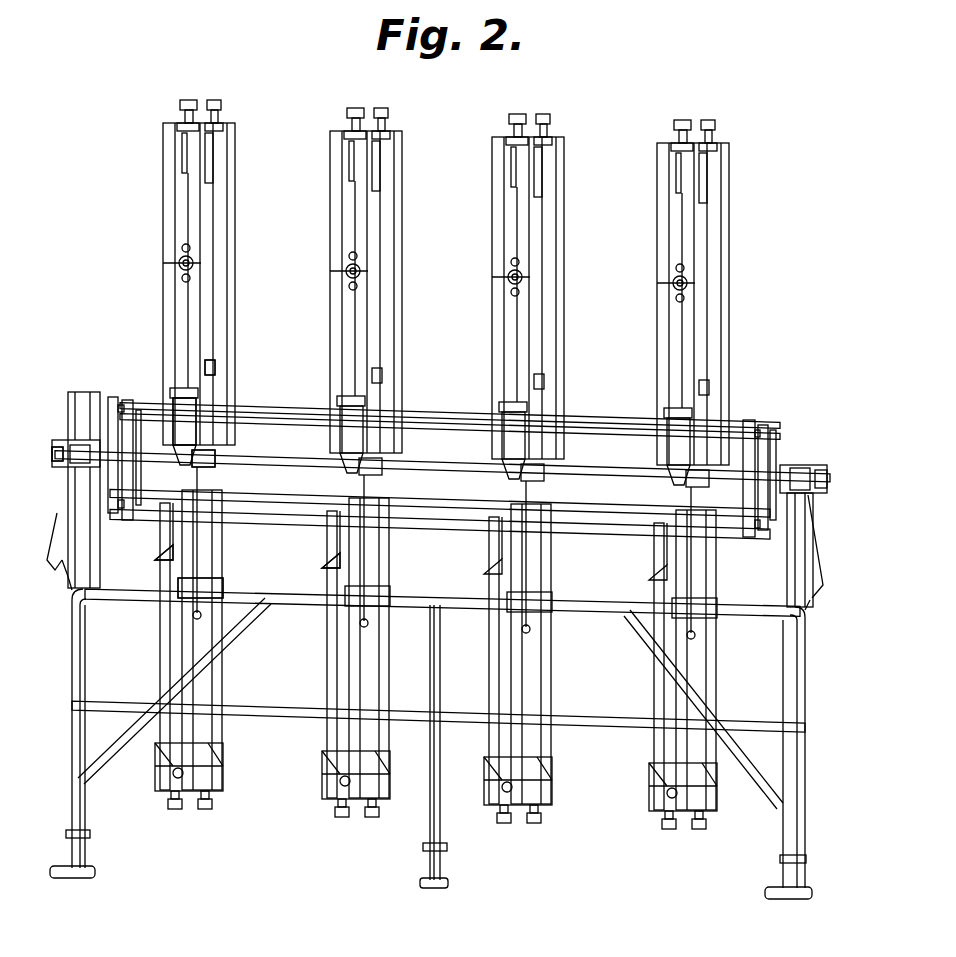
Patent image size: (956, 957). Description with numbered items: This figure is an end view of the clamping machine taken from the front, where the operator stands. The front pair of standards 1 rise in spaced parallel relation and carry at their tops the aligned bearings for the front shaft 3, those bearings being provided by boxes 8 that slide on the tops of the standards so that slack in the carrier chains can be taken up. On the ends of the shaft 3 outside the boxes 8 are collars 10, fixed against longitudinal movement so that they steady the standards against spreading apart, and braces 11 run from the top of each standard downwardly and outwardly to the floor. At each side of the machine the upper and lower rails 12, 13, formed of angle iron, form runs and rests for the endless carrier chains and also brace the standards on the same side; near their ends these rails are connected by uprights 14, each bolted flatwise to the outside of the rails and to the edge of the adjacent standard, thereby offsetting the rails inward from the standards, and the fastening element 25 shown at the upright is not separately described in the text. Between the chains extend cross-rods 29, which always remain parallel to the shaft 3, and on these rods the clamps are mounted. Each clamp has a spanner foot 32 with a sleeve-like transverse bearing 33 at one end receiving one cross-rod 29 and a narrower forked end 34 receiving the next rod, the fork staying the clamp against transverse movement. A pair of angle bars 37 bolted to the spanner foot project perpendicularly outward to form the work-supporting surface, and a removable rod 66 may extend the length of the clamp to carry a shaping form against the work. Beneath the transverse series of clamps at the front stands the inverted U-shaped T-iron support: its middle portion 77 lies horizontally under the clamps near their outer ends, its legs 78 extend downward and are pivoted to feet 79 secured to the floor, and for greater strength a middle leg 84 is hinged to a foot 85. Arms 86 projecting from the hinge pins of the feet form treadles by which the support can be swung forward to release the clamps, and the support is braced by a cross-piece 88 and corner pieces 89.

The front standards 1 is at (62, 602).
The front shaft 3 is at (432, 465).
The boxes 8 is at (70, 440).
The collars 10 is at (58, 442).
The braces 11 is at (56, 548).
The upper rails 12 is at (130, 410).
The lower rails 13 is at (116, 522).
The uprights 14 is at (118, 400).
The bolt 25 is at (119, 402).
The cross-rod 29 is at (287, 418).
The spanner foot 32 is at (196, 428).
The transverse bearing 33 is at (216, 462).
The forked end 34 is at (212, 400).
The angle bars 37 is at (168, 550).
The rod 66 is at (223, 570).
The middle portion 77 is at (302, 603).
The legs 78 is at (82, 670).
The feet 79 is at (68, 878).
The middle leg 84 is at (430, 788).
The foot 85 is at (433, 888).
The arms 86 is at (70, 832).
The cross-piece 88 is at (272, 713).
The corner pieces 89 is at (124, 748).